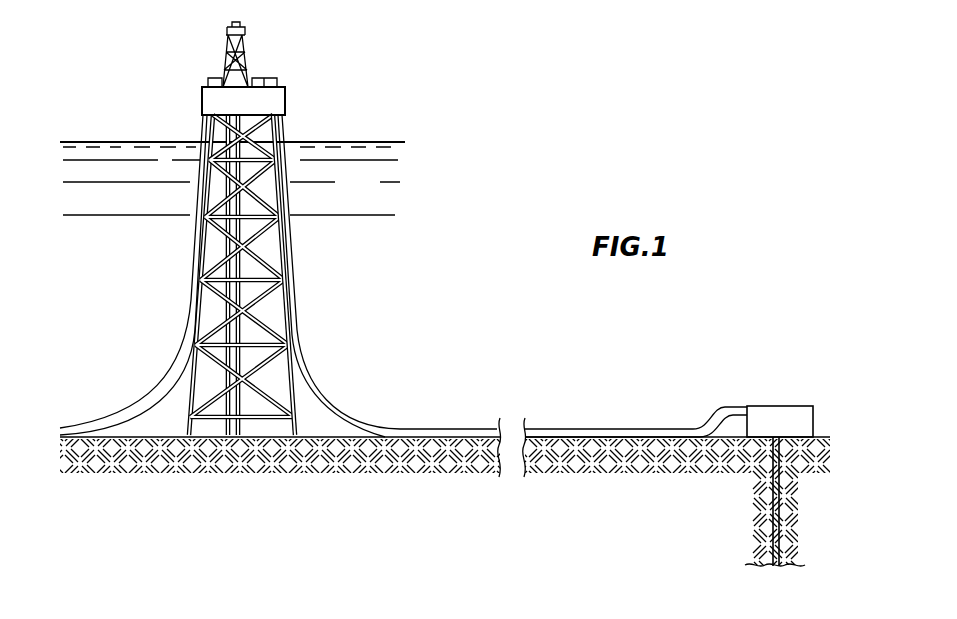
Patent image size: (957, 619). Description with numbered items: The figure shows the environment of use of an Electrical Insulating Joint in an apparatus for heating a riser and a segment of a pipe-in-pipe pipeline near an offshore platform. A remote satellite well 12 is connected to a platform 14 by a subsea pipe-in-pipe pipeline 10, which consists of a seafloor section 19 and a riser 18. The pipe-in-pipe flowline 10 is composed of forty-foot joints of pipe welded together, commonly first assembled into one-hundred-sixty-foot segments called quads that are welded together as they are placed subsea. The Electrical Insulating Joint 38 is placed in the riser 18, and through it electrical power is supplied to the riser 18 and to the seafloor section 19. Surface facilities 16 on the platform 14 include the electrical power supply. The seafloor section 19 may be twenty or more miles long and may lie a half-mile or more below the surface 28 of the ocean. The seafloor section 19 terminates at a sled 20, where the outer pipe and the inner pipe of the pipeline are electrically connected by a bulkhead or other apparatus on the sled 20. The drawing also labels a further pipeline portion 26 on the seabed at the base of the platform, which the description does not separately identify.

The subsea pipe-in-pipe pipeline 10 is at (349, 360).
The remote satellite well 12 is at (770, 530).
The platform 14 is at (299, 101).
The surface facilities 16 is at (280, 76).
The riser 18 is at (299, 290).
The seafloor section 19 is at (608, 430).
The sled 20 is at (774, 406).
The pipeline 26 is at (140, 435).
The surface of the ocean 28 is at (87, 142).
The Electrical Insulating Joint 38 is at (286, 126).